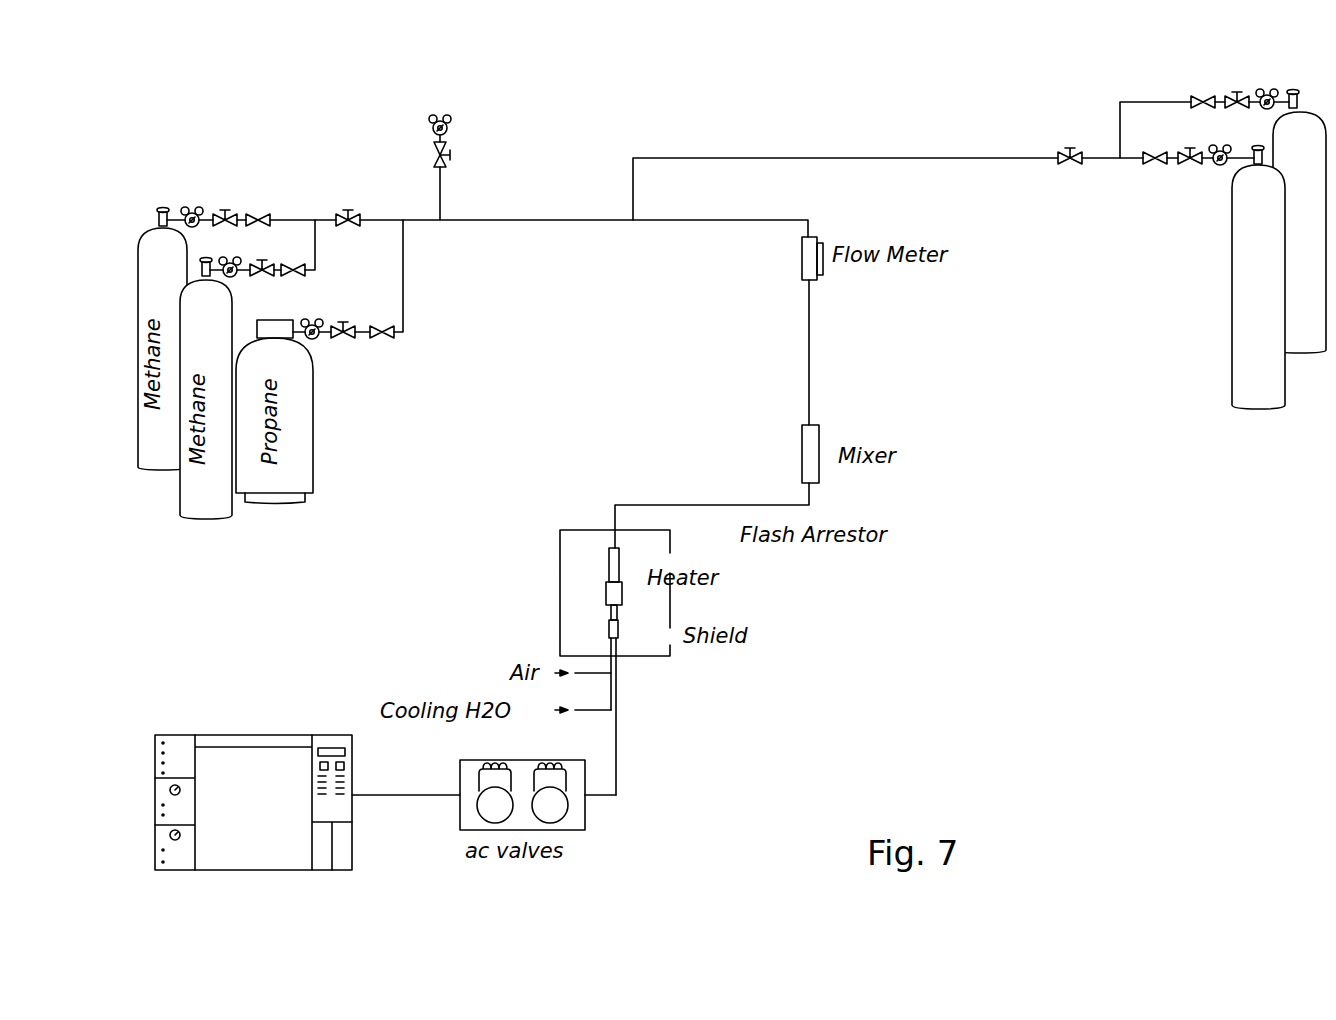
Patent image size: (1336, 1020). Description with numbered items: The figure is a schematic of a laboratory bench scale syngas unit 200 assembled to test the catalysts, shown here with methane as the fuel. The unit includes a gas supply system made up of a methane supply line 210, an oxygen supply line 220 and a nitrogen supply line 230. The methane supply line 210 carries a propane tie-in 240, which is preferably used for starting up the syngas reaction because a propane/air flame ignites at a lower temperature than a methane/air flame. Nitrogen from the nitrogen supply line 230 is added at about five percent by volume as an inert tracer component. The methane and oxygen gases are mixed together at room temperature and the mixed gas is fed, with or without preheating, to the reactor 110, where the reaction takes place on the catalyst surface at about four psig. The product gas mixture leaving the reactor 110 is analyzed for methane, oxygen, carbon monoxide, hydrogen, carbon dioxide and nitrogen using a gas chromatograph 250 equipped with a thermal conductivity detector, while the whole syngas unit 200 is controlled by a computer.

The syngas unit 200 is at (613, 108).
The methane supply line 210 is at (380, 218).
The oxygen supply line 220 is at (704, 158).
The nitrogen supply line 230 is at (443, 188).
The propane tie-in 240 is at (405, 262).
The gas chromatograph 250 is at (266, 695).
The reactor 110 is at (590, 603).